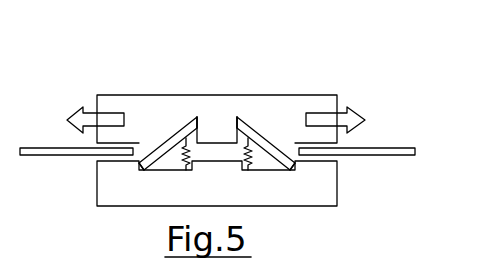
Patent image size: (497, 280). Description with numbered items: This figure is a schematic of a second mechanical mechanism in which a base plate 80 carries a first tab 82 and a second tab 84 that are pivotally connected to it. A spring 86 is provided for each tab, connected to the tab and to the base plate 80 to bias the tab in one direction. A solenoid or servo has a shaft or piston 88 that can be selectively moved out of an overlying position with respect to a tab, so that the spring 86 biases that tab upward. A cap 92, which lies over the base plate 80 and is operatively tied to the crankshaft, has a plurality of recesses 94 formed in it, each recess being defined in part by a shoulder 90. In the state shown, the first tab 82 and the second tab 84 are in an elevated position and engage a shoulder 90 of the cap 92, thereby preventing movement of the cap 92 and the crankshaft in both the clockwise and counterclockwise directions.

The base plate 80 is at (321, 185).
The first tab 82 is at (148, 163).
The second tab 84 is at (286, 157).
The spring 86 is at (188, 150).
The shaft or piston 88 is at (58, 152).
The shoulder 90 is at (195, 118).
The cap 92 is at (141, 104).
The recesses 94 is at (238, 117).